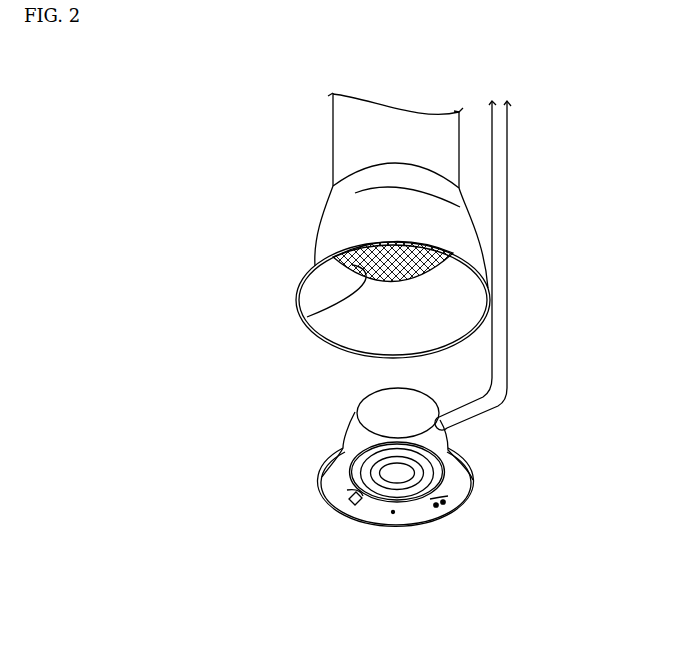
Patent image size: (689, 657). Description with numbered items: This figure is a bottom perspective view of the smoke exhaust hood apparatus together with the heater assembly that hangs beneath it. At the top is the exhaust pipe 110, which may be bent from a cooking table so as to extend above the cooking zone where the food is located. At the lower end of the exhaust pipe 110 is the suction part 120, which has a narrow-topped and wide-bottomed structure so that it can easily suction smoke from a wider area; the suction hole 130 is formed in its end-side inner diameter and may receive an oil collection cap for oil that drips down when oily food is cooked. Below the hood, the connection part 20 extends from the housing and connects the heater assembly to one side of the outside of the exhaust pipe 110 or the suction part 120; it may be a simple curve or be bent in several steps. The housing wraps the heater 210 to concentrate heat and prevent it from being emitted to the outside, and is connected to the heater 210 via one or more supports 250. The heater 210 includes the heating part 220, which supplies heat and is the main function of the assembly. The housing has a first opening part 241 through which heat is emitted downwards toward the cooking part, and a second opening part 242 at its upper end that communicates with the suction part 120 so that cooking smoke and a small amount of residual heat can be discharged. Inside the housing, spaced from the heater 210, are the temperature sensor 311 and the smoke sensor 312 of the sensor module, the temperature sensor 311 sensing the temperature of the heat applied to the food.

The exhaust pipe 110 is at (347, 128).
The suction part 120 is at (327, 240).
The suction hole 130 is at (307, 317).
The connection part 20 is at (502, 198).
The second opening part 242 is at (373, 391).
The first opening part 241 is at (330, 505).
The heater 210 is at (393, 507).
The heating part 220 is at (422, 493).
The supports 250 is at (362, 505).
The temperature sensor 311 is at (438, 505).
The smoke sensor 312 is at (438, 503).